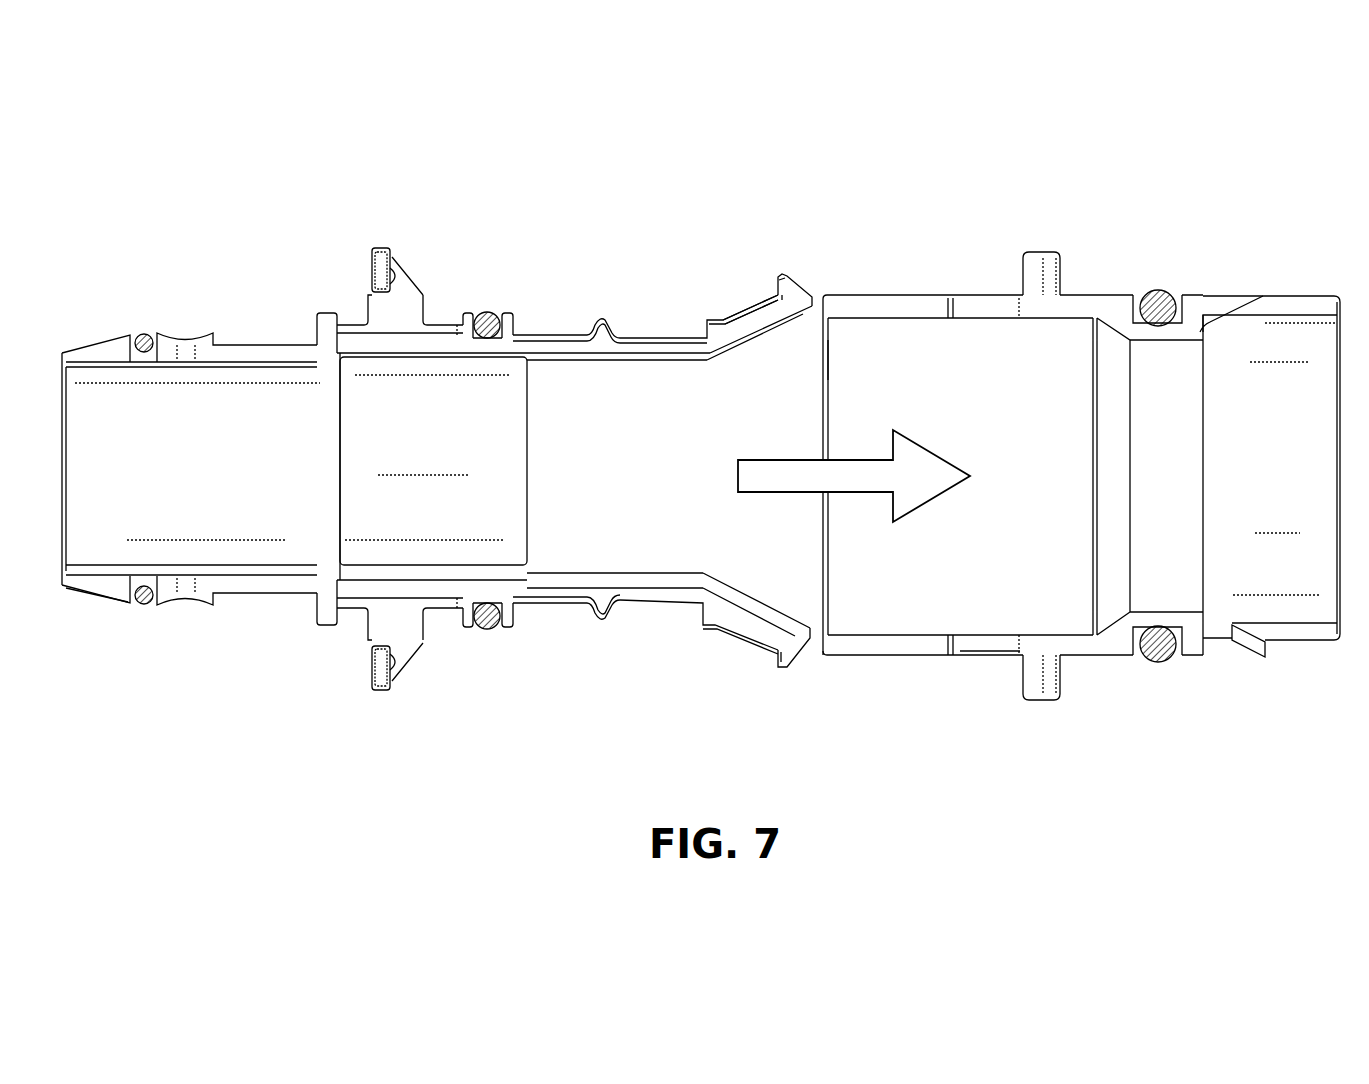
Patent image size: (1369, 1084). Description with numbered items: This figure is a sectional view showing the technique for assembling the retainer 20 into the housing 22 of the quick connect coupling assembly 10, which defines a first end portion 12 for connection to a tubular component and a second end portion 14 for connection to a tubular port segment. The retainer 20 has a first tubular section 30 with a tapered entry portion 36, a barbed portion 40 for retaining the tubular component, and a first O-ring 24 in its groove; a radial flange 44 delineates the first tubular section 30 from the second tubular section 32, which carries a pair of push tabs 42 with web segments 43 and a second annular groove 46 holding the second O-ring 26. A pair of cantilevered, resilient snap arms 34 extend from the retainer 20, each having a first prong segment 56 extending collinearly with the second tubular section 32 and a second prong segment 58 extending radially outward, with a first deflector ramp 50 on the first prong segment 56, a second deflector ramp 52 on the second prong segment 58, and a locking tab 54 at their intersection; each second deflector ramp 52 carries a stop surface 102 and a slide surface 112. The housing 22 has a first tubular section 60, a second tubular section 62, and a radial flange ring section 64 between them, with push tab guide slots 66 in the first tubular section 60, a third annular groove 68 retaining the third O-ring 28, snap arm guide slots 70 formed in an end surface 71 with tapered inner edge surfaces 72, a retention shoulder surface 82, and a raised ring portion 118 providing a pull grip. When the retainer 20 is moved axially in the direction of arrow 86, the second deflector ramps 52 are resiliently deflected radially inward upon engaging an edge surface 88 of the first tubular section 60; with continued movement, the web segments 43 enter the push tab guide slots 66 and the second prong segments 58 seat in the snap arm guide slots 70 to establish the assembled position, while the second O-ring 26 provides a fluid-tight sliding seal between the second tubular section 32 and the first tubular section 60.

The quick connect coupling assembly 10 is at (570, 176).
The first end portion 12 is at (88, 332).
The second end portion 14 is at (1272, 270).
The quick connect retainer 20 is at (240, 333).
The quick connect housing 22 is at (1200, 280).
The first O-ring 24 is at (140, 335).
The second O-ring 26 is at (490, 318).
The third O-ring 28 is at (1158, 290).
The first tubular section 30 is at (202, 459).
The second tubular section 32 is at (414, 459).
The snap arms 34 is at (630, 318).
The tapered entry portion 36 is at (100, 598).
The barbed portion 40 is at (205, 592).
The push tabs 42 is at (372, 252).
The web segment 43 is at (408, 300).
The radial flange 44 is at (325, 316).
The second annular groove 46 is at (508, 318).
The first deflector ramp 50 is at (605, 320).
The second deflector ramp 52 is at (795, 286).
The locking tab 54 is at (698, 325).
The first prong segment 56 is at (598, 357).
The second prong segment 58 is at (738, 323).
The first tubular section 60 is at (988, 656).
The second tubular section 62 is at (1100, 660).
The radial flange ring section 64 is at (1047, 265).
The push tab guide slots 66 is at (940, 298).
The third annular groove 68 is at (1137, 300).
The snap arm guide slots 70 is at (1295, 298).
The end surface 71 is at (1338, 302).
The tapered inner edge surface 72 is at (1250, 648).
The retention shoulder surface 82 is at (1215, 320).
The arrow 86 is at (790, 465).
The edge surface 88 is at (823, 357).
The stop surface 102 is at (776, 284).
The slide surface 112 is at (782, 276).
The raised ring portion 118 is at (830, 292).